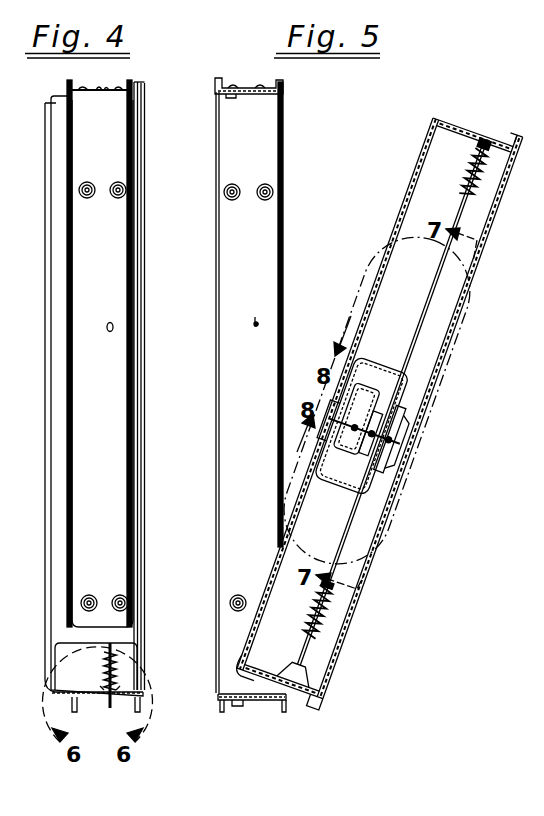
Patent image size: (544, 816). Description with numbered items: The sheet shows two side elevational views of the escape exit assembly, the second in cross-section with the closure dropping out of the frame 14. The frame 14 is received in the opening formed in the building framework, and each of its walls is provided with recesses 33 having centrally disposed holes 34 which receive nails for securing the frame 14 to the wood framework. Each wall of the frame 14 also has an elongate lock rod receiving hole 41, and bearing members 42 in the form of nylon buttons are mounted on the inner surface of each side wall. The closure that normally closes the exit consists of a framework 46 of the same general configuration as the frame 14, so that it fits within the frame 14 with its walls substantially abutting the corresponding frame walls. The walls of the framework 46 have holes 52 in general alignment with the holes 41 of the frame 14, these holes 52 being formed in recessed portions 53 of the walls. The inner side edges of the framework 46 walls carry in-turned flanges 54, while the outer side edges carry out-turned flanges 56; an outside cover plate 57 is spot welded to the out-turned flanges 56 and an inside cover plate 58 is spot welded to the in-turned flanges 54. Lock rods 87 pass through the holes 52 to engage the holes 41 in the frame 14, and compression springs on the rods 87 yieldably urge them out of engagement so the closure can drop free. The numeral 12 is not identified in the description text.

In FIG. 4, the frame 12 is at (3, 400).
In FIG. 4, the frame 14 is at (85, 136).
In FIG. 5, the frame 14 is at (272, 135).
In FIG. 5, the recesses 33 is at (232, 89).
In FIG. 5, the holes 34 is at (269, 188).
In FIG. 5, the lock rod receiving hole 41 is at (254, 323).
In FIG. 4, the bearing members 42 is at (86, 398).
In FIG. 5, the bearing members 42 is at (240, 700).
In FIG. 4, the framework 46 is at (57, 256).
In FIG. 4, the holes 52 is at (112, 685).
In FIG. 5, the recessed portions 53 is at (311, 692).
In FIG. 5, the in-turned flanges 54 is at (240, 678).
In FIG. 5, the out-turned flanges 56 is at (320, 710).
In FIG. 4, the outside cover plate 57 is at (143, 178).
In FIG. 5, the outside cover plate 57 is at (492, 241).
In FIG. 4, the inside cover plate 58 is at (48, 316).
In FIG. 5, the inside cover plate 58 is at (392, 257).
In FIG. 4, the lock rods 87 is at (113, 327).
In FIG. 5, the lock rods 87 is at (317, 620).